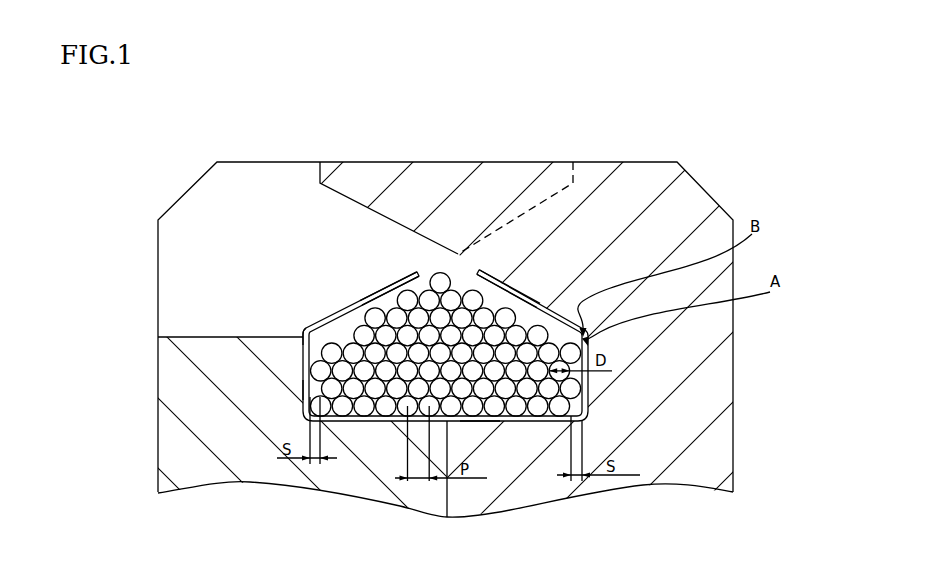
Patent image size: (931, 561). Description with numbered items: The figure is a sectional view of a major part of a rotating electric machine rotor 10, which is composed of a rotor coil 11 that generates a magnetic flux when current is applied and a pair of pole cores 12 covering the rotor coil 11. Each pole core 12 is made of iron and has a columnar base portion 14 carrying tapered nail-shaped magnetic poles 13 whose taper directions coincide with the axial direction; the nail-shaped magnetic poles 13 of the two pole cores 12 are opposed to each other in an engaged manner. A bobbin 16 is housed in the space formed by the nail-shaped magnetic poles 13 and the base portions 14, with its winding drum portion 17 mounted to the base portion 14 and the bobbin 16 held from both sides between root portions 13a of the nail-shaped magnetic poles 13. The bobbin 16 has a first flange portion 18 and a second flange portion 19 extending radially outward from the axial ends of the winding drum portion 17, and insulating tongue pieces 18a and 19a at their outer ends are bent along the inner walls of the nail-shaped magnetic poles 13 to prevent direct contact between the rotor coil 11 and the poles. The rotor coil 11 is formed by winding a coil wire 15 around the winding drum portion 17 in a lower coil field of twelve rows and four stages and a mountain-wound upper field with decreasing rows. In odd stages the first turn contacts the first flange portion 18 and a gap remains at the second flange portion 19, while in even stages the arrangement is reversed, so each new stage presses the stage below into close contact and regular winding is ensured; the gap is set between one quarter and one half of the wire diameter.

The rotating electric machine rotor 10 is at (118, 169).
The rotor coil 11 is at (464, 273).
The pole core 12 is at (718, 328).
The nail-shaped magnetic pole 13 is at (629, 186).
The root portion 13a is at (717, 364).
The base portion 14 is at (717, 445).
The coil wire 15 is at (314, 331).
The bobbin 16 is at (296, 392).
The winding drum portion 17 is at (477, 421).
The first flange portion 18 is at (330, 348).
The tongue piece 18a is at (372, 295).
The second flange portion 19 is at (590, 392).
The tongue piece 19a is at (548, 321).